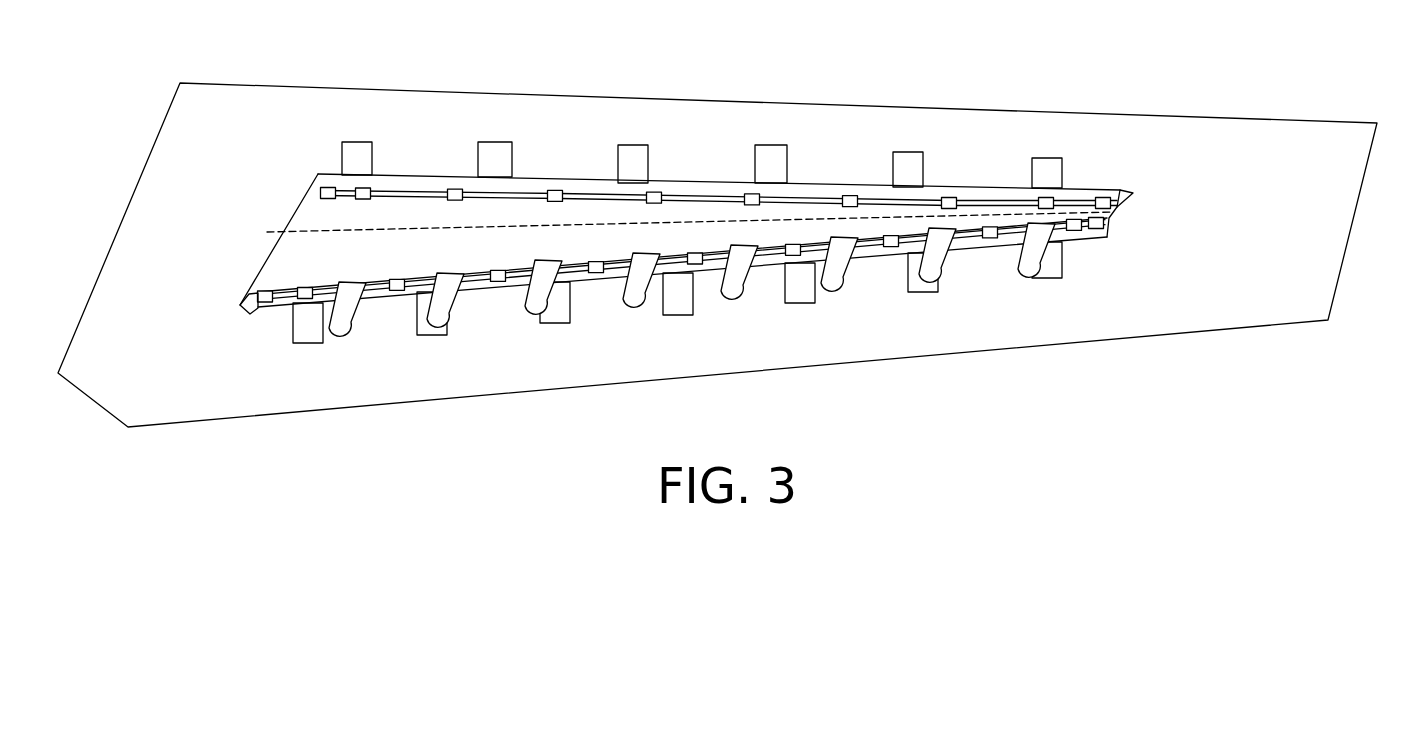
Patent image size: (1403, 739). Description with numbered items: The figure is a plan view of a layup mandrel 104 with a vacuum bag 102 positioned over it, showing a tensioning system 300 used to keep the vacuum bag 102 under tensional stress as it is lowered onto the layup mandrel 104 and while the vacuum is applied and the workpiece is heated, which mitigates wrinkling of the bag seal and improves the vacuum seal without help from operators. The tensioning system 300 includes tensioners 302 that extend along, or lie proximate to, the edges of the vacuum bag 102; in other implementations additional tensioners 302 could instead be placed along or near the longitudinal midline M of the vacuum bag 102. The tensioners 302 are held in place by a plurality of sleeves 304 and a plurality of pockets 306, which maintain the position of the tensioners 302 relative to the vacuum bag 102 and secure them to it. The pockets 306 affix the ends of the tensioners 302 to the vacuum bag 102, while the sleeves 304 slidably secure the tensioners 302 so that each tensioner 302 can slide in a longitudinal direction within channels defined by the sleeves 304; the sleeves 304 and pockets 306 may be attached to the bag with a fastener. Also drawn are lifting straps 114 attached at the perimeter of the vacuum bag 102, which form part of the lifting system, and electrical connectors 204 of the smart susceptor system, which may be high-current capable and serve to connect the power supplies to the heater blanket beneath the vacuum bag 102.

The layup mandrel 104 is at (1267, 313).
The tensioning system 300 is at (302, 265).
The longitudinal midline M is at (679, 229).
The tensioner 302 is at (694, 194).
The sleeve 304 is at (457, 187).
The lifting strap 114 is at (497, 142).
The electrical connector 204 is at (337, 335).
The pocket 306 is at (247, 297).
The vacuum bag 102 is at (1133, 193).